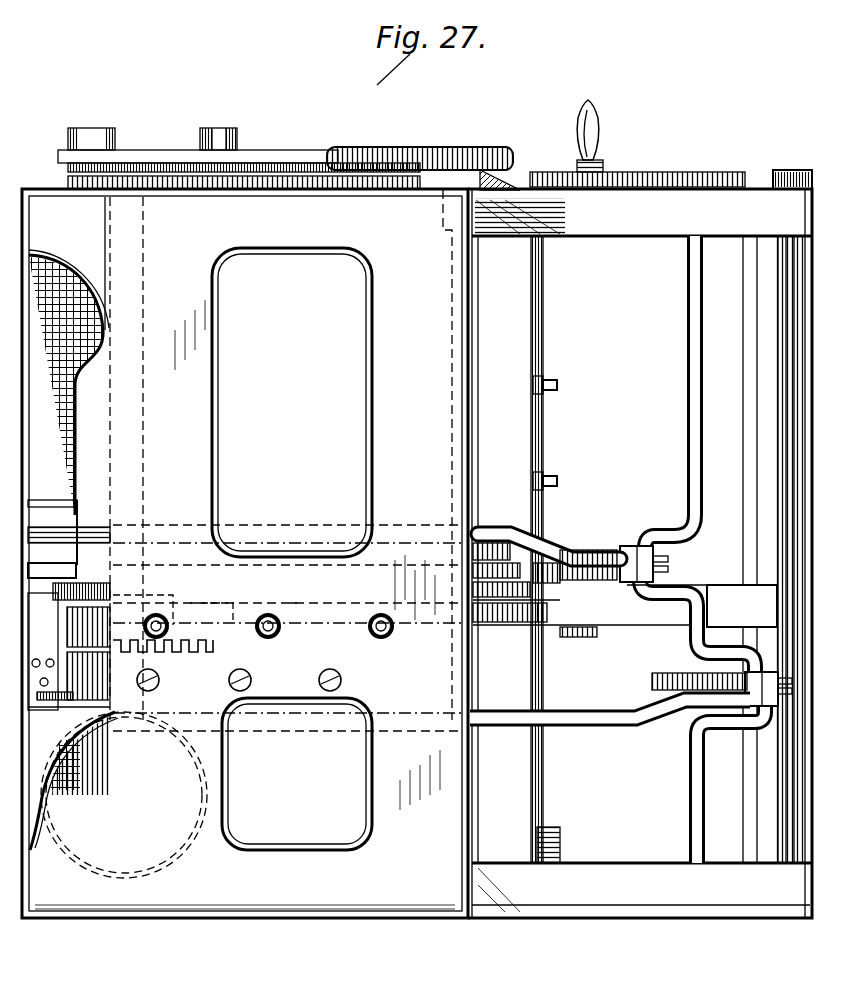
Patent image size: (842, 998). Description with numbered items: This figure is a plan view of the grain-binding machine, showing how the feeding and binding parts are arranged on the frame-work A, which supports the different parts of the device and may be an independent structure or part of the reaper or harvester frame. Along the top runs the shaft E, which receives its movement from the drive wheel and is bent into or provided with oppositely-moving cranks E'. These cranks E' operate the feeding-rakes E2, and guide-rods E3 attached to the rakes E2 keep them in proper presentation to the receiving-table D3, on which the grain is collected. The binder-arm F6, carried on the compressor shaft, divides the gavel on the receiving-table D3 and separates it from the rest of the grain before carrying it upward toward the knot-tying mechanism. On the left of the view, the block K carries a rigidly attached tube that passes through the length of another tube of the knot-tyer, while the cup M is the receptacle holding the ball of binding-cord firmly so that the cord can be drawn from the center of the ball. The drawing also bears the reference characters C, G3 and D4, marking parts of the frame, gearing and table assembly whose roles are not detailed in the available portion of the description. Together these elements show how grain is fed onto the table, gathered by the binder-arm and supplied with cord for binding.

The frame-work A is at (138, 347).
The rack C is at (262, 187).
The block K is at (69, 605).
The cup M is at (118, 795).
The rack G3 is at (113, 627).
The binder-arm F6 is at (303, 602).
The shaft E is at (640, 544).
The cranks E' is at (482, 481).
The feeding-rakes E2 is at (130, 141).
The guide-rods E3 is at (450, 133).
The receiving-table D3 is at (620, 342).
The stud D4 is at (557, 392).